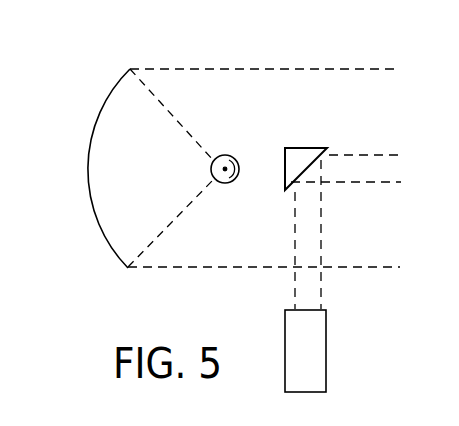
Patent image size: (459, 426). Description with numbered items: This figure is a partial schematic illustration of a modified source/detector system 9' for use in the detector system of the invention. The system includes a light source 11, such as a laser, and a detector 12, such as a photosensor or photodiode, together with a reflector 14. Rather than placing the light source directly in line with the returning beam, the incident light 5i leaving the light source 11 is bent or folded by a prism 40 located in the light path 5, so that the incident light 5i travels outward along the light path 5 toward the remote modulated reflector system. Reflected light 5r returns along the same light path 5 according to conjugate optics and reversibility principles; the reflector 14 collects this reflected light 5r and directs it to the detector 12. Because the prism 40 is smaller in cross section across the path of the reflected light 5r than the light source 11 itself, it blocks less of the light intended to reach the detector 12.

The reflector 14 is at (98, 122).
The detector 12 is at (236, 156).
The reflected light 5r is at (317, 68).
The light path 5 is at (413, 74).
The modified source/detector system 9' is at (337, 34).
The prism 40 is at (299, 148).
The incident light 5i is at (362, 184).
The light source 11 is at (326, 348).